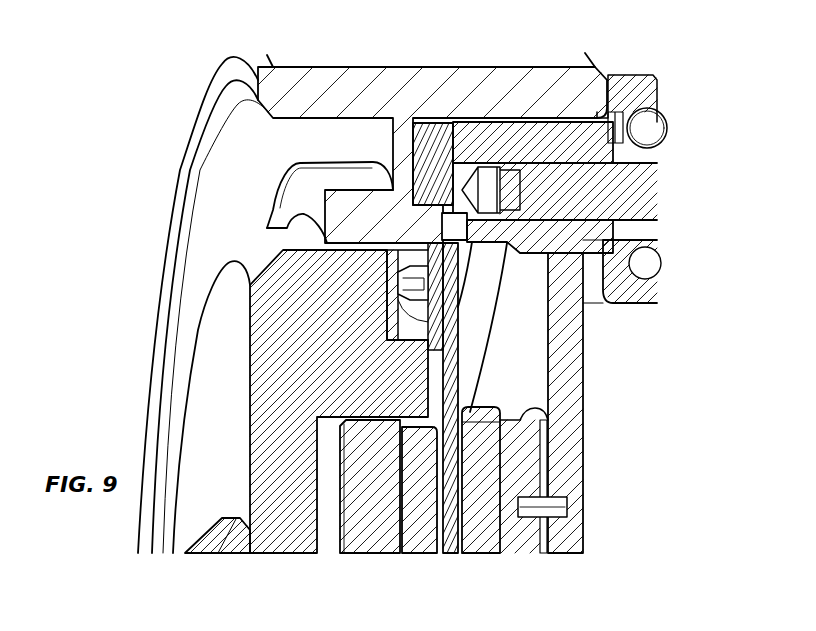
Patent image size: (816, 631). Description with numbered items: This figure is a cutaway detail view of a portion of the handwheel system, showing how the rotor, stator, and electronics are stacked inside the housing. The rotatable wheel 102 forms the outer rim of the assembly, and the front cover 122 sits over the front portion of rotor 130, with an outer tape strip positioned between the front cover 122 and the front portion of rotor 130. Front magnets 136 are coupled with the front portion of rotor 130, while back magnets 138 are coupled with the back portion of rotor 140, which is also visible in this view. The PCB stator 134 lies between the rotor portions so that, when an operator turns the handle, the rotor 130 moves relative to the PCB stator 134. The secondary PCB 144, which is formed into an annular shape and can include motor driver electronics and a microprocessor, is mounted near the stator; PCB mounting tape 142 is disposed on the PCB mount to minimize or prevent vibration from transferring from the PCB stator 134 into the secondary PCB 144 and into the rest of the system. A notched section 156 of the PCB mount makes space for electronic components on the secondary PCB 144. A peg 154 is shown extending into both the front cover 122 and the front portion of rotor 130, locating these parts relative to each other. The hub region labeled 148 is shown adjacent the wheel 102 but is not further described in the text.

The rotatable wheel 102 is at (292, 84).
The front cover 122 is at (543, 133).
The front portion of rotor 130 is at (520, 545).
The PCB stator 134 is at (452, 545).
The front magnets 136 is at (483, 545).
The back magnets 138 is at (420, 548).
The back portion of rotor 140 is at (370, 545).
The PCB mounting tape 142 is at (442, 267).
The secondary PCB 144 is at (430, 267).
The hub 148 is at (262, 390).
The peg 154 is at (553, 507).
The notched section 156 is at (392, 308).